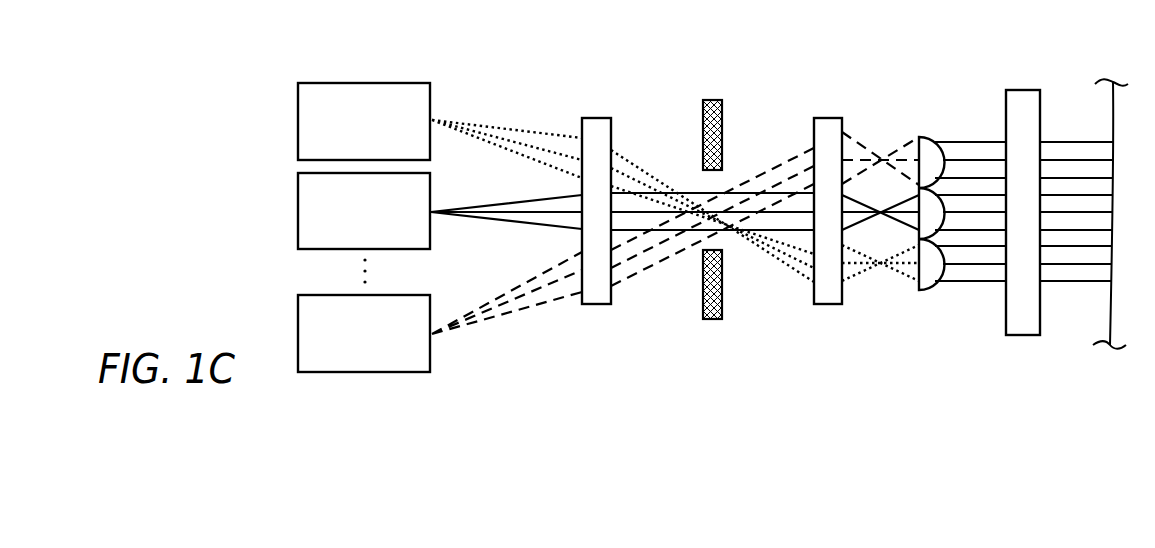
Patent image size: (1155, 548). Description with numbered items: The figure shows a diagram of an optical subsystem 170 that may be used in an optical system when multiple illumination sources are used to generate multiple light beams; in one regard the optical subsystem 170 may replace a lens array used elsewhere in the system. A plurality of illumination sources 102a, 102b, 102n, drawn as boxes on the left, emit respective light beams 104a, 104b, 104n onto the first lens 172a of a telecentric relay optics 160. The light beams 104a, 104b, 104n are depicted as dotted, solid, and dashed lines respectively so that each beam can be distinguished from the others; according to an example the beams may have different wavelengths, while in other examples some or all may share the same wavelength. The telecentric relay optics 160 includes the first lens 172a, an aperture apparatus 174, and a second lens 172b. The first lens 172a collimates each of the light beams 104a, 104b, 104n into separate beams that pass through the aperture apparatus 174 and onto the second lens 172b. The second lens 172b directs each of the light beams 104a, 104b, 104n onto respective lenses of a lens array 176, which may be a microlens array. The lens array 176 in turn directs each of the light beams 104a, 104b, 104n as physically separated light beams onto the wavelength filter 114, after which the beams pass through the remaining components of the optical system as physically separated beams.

The optical subsystem 170 is at (484, 74).
The illumination source 102a is at (364, 121).
The illumination source 102b is at (364, 211).
The illumination source 102n is at (364, 333).
The light beam 104a is at (530, 132).
The light beam 104b is at (506, 229).
The light beam 104n is at (532, 306).
The first lens 172a is at (600, 305).
The second lens 172b is at (826, 117).
The aperture apparatus 174 is at (712, 99).
The lens array 176 is at (922, 137).
The telecentric relay optics 160 is at (783, 319).
The wavelength filter 114 is at (1022, 336).